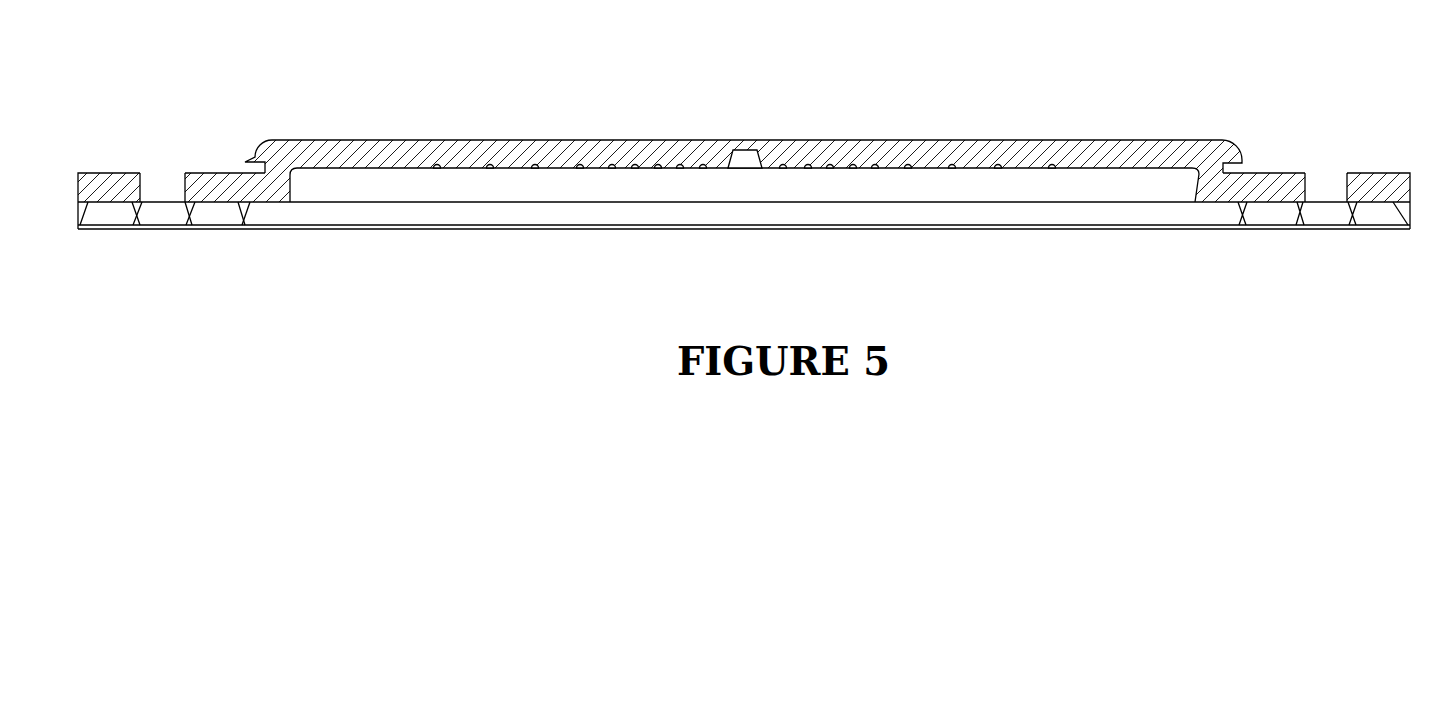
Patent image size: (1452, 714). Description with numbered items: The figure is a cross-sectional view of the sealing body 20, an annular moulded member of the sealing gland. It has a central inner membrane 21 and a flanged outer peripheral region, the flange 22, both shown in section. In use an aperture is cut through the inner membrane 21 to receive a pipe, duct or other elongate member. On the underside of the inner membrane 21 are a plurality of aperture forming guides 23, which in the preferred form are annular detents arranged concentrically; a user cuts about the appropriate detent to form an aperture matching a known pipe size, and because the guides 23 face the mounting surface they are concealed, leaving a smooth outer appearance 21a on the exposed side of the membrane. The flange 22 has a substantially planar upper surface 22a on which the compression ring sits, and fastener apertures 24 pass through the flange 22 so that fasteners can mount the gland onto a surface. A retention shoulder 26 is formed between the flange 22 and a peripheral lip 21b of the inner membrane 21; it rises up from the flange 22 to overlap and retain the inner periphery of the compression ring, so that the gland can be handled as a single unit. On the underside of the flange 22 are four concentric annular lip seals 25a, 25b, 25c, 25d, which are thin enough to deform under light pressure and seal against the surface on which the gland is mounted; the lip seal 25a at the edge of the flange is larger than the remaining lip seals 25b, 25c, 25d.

The sealing body 20 is at (850, 126).
The inner membrane 21 is at (290, 152).
The outer appearance of inner membrane 21a is at (438, 140).
The peripheral lip 21b is at (252, 160).
The flange 22 is at (101, 187).
The planar surface of flange 22a is at (1363, 173).
The aperture forming guides 23 is at (437, 170).
The fastener apertures 24 is at (165, 173).
The first annular lip seal 25a is at (85, 227).
The second annular lip seal 25b is at (143, 208).
The third annular lip seal 25c is at (192, 208).
The fourth annular lip seal 25d is at (247, 208).
The retention shoulder 26 is at (1238, 168).